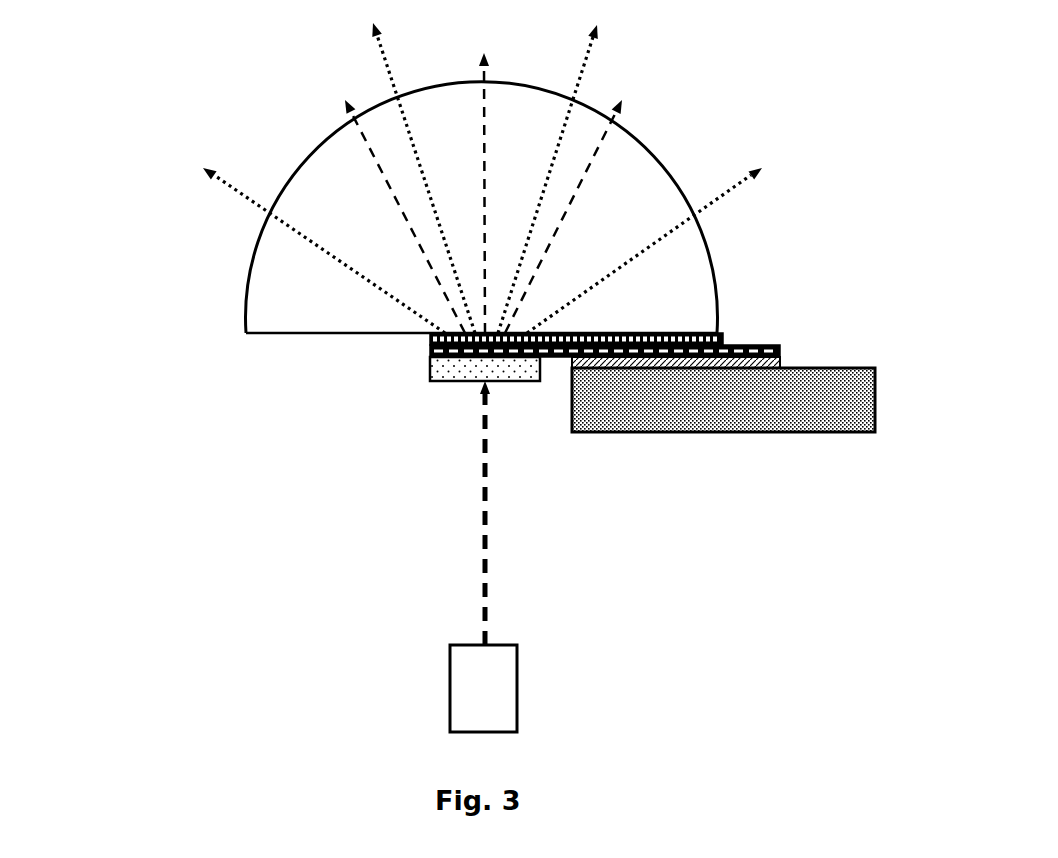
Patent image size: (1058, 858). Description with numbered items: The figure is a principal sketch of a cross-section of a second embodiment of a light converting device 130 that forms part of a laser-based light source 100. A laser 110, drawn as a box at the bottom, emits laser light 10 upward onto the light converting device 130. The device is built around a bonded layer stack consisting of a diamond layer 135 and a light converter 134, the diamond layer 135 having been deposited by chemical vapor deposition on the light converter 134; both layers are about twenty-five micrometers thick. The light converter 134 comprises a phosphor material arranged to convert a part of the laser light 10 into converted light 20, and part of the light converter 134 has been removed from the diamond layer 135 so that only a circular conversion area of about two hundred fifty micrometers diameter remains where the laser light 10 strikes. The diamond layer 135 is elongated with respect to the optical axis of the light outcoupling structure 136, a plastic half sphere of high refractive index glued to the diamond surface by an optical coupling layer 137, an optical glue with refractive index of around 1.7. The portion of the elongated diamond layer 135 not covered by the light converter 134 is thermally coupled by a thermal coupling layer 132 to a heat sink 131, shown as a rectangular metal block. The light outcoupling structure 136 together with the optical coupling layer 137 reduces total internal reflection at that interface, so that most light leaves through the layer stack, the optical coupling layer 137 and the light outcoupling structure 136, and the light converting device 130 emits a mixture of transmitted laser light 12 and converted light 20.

The laser-based light source 100 is at (130, 119).
The laser light 10 is at (482, 630).
The laser 110 is at (450, 688).
The transmitted laser light 12 is at (576, 190).
The converted light 20 is at (733, 196).
The light converting device 130 is at (882, 98).
The heat sink 131 is at (749, 433).
The thermal coupling layer 132 is at (782, 364).
The light converter 134 is at (455, 383).
The diamond layer 135 is at (780, 352).
The light outcoupling structure 136 is at (697, 278).
The optical coupling layer 137 is at (430, 340).